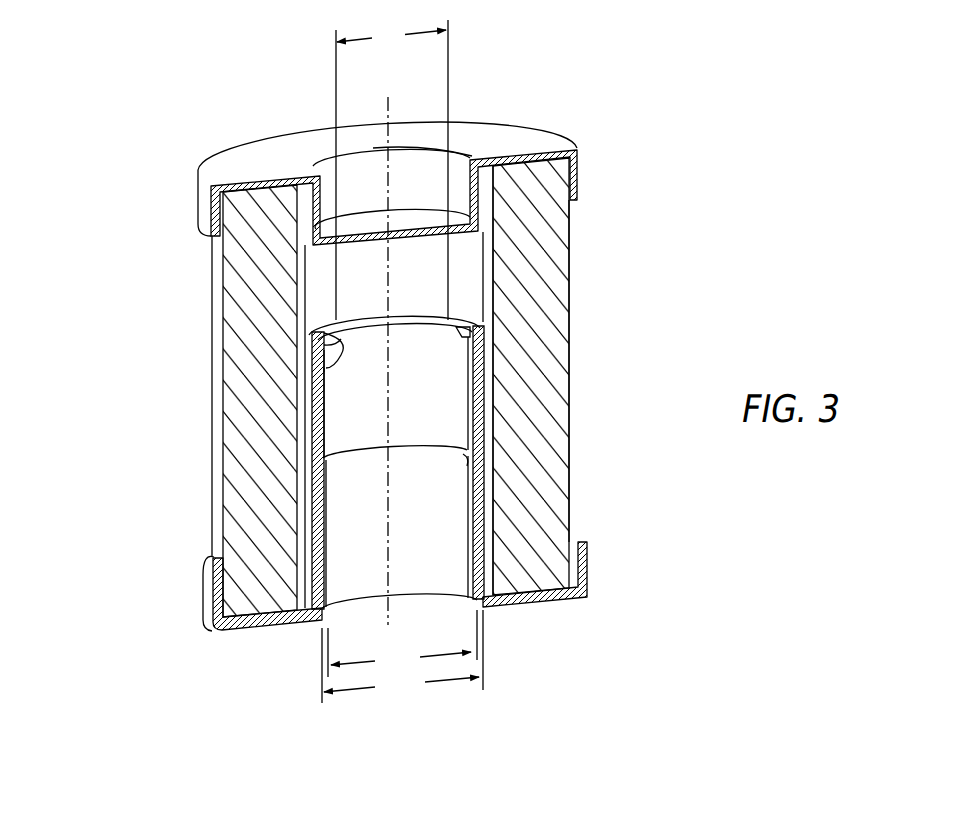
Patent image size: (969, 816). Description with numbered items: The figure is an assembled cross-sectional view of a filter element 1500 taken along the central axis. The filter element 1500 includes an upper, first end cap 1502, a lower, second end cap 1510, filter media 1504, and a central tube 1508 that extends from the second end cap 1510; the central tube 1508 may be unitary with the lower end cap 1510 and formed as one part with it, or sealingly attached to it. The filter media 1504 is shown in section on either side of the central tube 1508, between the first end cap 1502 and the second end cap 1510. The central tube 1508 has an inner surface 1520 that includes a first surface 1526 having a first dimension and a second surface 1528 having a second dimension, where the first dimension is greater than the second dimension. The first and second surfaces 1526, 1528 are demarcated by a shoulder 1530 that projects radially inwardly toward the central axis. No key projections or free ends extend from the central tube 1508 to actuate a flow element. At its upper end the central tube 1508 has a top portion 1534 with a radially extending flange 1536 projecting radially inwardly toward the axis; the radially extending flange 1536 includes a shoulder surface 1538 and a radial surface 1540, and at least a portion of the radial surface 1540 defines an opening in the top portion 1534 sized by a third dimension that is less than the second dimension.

The filter element 1500 is at (153, 92).
The first end cap 1502 is at (632, 152).
The filter media 1504 is at (631, 336).
The central tube 1508 is at (652, 247).
The second end cap 1510 is at (643, 556).
The inner surface 1520 is at (368, 543).
The first surface 1526 is at (463, 596).
The second surface 1528 is at (463, 448).
The shoulder 1530 is at (323, 475).
The top portion 1534 is at (318, 312).
The radially extending flange 1536 is at (306, 330).
The shoulder surface 1538 is at (340, 373).
The radial surface 1540 is at (333, 337).